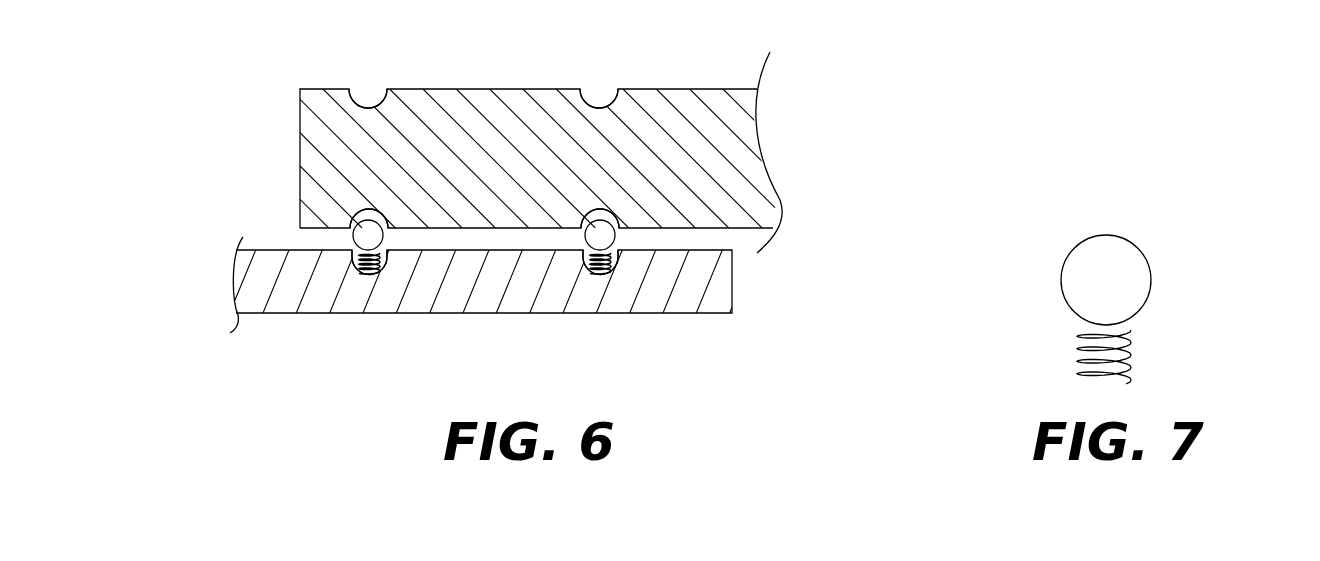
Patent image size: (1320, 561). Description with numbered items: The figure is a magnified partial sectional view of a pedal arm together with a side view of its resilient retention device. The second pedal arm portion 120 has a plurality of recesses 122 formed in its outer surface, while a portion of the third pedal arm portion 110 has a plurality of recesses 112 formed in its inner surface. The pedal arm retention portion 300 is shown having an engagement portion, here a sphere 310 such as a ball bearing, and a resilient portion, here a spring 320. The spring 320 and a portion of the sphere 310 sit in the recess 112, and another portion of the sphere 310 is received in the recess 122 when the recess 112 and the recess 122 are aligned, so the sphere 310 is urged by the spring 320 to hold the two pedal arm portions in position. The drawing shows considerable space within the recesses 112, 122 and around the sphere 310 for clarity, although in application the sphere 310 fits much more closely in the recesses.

In FIG. 6, the third pedal arm portion 110 is at (713, 315).
In FIG. 6, the recesses 112 is at (362, 278).
In FIG. 6, the second pedal arm portion 120 is at (511, 89).
In FIG. 6, the recesses 122 is at (370, 107).
In FIG. 7, the pedal arm retention portion 300 is at (1173, 224).
In FIG. 6, the sphere 310 is at (377, 231).
In FIG. 7, the sphere 310 is at (1113, 264).
In FIG. 6, the spring 320 is at (383, 276).
In FIG. 7, the spring 320 is at (1150, 348).